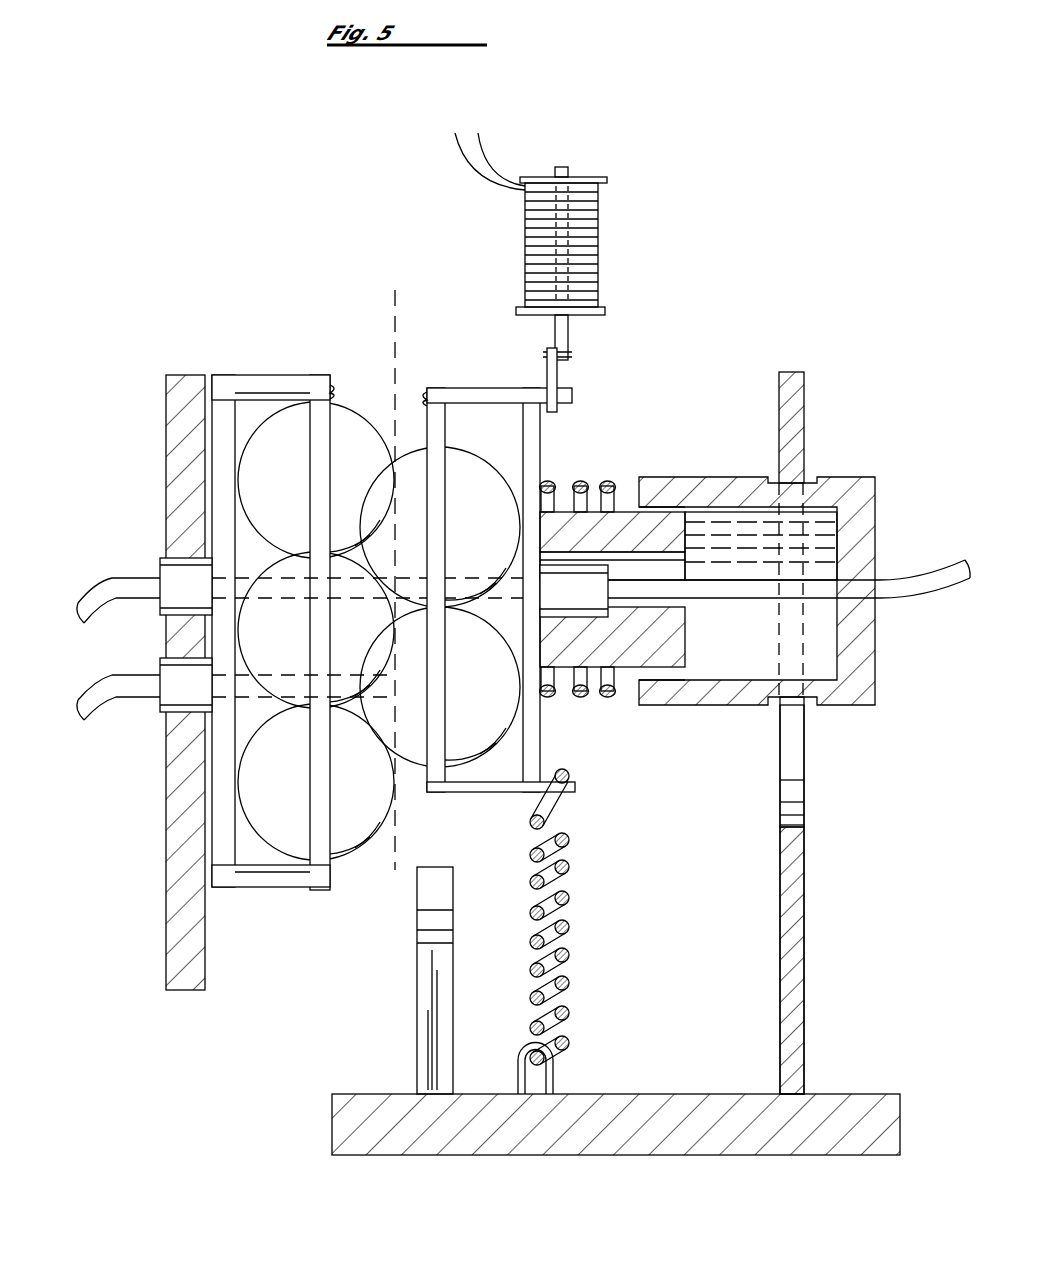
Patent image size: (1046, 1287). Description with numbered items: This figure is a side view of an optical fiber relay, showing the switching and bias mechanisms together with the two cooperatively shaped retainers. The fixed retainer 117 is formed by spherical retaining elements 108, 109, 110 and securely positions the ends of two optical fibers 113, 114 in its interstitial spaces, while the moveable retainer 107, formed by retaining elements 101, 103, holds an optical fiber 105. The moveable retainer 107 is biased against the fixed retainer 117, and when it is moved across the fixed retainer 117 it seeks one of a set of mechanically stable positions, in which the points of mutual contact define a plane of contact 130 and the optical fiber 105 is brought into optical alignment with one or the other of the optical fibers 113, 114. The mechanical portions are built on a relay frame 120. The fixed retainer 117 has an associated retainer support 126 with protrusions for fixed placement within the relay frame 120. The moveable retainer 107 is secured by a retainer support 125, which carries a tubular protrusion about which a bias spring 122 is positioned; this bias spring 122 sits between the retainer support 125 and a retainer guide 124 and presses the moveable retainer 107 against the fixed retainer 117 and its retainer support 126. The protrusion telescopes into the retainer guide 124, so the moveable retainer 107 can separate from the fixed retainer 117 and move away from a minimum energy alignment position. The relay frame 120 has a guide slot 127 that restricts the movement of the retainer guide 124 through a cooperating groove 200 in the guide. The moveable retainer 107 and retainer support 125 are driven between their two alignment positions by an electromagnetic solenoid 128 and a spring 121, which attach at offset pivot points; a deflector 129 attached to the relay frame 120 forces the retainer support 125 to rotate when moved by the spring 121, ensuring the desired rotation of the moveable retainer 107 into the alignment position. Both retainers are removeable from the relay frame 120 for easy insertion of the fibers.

The retaining element 101 is at (462, 458).
The retaining element 103 is at (465, 745).
The optical fiber 105 is at (893, 577).
The moveable retainer 107 is at (483, 345).
The retaining element 108 is at (357, 425).
The retaining element 109 is at (245, 715).
The retaining element 110 is at (342, 850).
The optical fiber 113 is at (133, 580).
The optical fiber 114 is at (131, 685).
The fixed retainer 117 is at (272, 345).
The relay frame 120 is at (462, 1155).
The spring 121 is at (565, 897).
The bias spring 122 is at (578, 484).
The retainer guide 124 is at (680, 477).
The retainer support 125 is at (536, 741).
The retainer support 126 is at (266, 887).
The guide slot 127 is at (800, 793).
The solenoid 128 is at (598, 232).
The deflector 129 is at (430, 1018).
The plane of contact 130 is at (393, 302).
The groove 200 is at (818, 480).